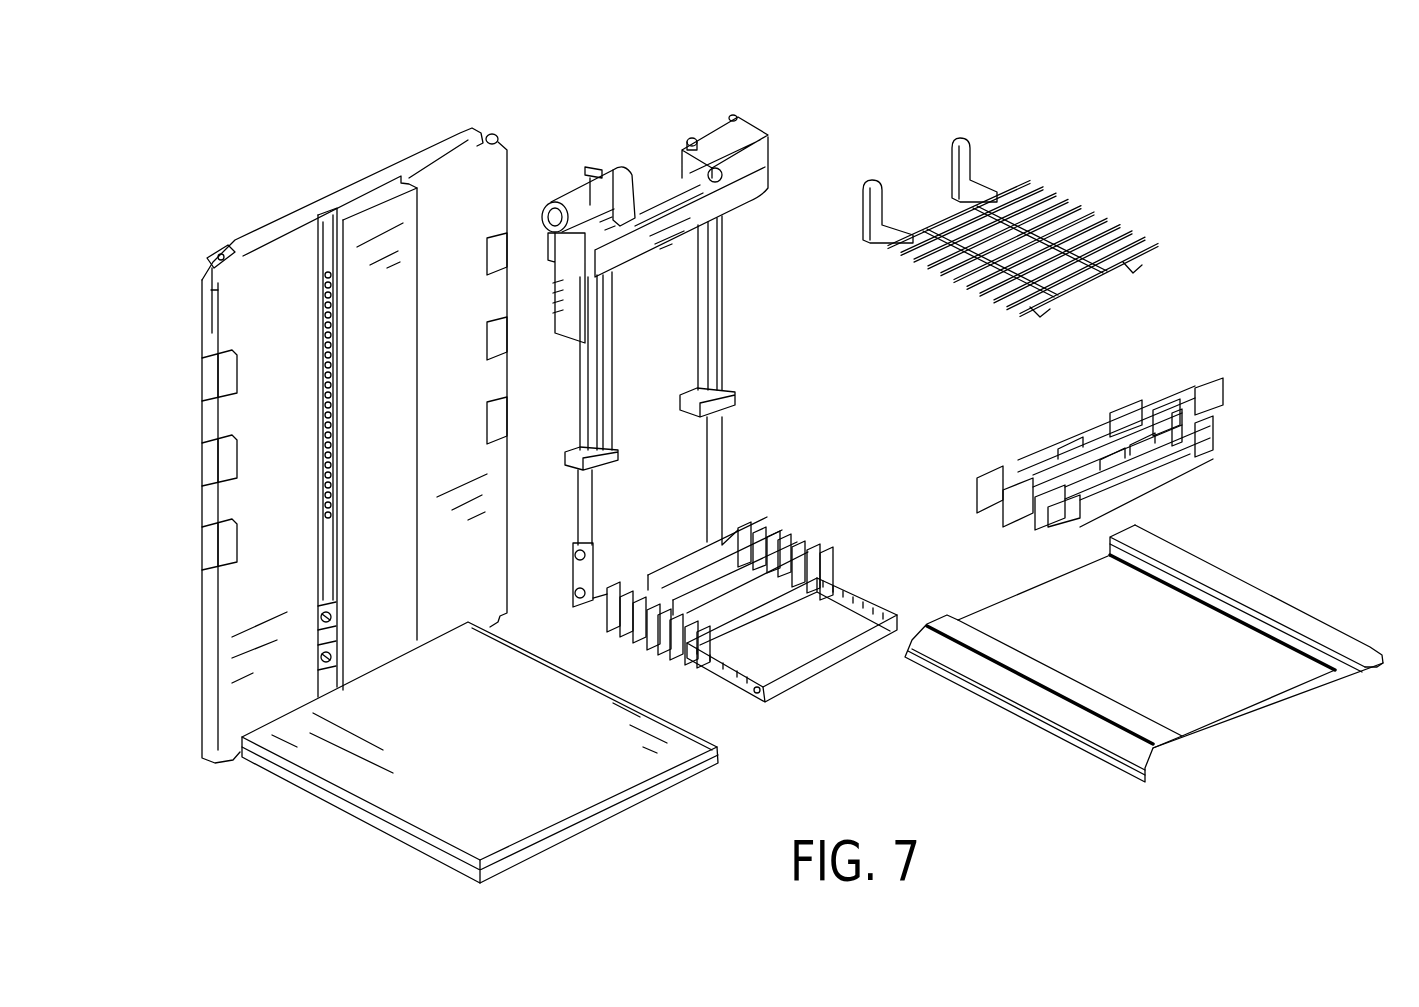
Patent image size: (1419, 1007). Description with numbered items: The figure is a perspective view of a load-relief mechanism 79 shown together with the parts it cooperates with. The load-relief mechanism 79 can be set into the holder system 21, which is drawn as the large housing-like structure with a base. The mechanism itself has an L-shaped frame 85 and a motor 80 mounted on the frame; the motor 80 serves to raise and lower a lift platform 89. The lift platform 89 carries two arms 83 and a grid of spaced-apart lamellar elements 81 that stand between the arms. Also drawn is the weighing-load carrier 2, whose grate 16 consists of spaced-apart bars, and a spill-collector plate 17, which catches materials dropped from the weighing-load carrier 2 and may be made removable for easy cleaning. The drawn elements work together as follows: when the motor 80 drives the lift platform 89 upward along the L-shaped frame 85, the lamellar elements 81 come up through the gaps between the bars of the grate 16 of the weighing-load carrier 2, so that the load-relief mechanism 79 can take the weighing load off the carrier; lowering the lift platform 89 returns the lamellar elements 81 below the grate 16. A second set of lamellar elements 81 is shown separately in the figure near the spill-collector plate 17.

The weighing-load carrier 2 is at (1030, 215).
The grate 16 is at (1118, 228).
The spill-collector plate 17 is at (1153, 650).
The holder system 21 is at (388, 437).
The load-relief mechanism 79 is at (732, 373).
The motor 80 is at (590, 200).
The lamellar elements 81 is at (813, 550).
The arms 83 is at (860, 600).
The L-shaped frame 85 is at (715, 457).
The lift platform 89 is at (758, 573).